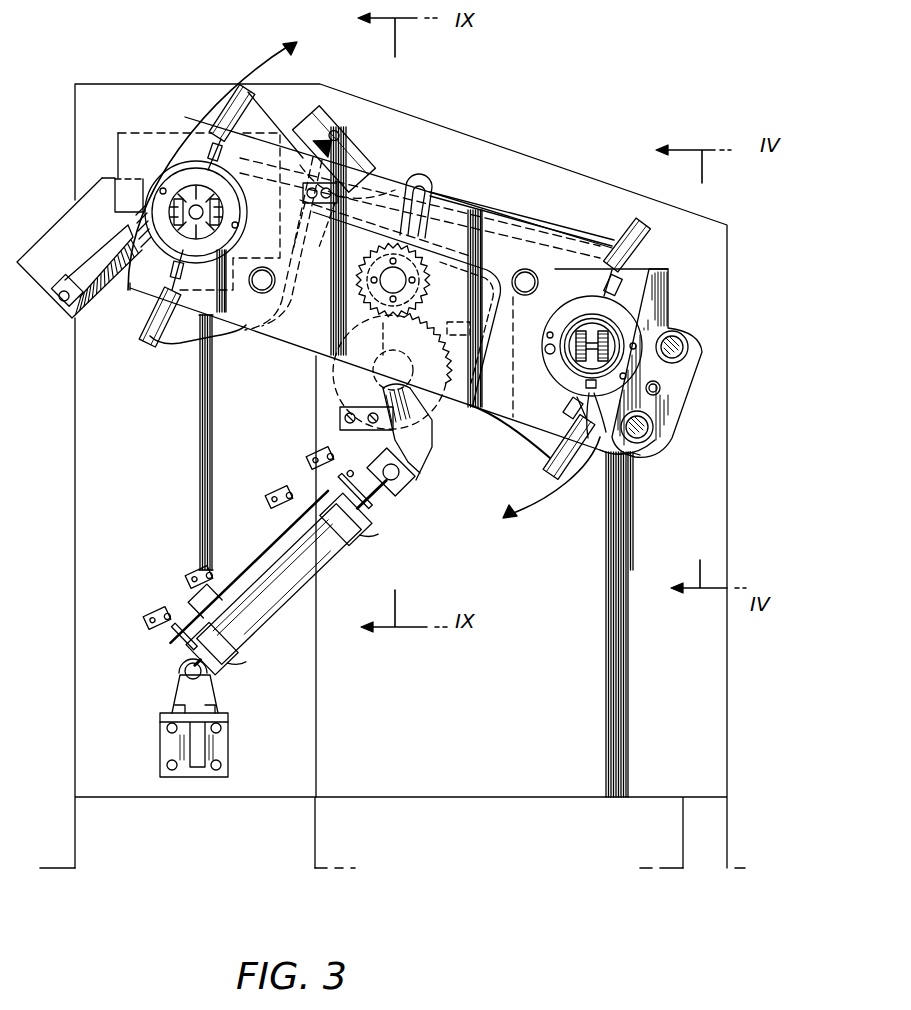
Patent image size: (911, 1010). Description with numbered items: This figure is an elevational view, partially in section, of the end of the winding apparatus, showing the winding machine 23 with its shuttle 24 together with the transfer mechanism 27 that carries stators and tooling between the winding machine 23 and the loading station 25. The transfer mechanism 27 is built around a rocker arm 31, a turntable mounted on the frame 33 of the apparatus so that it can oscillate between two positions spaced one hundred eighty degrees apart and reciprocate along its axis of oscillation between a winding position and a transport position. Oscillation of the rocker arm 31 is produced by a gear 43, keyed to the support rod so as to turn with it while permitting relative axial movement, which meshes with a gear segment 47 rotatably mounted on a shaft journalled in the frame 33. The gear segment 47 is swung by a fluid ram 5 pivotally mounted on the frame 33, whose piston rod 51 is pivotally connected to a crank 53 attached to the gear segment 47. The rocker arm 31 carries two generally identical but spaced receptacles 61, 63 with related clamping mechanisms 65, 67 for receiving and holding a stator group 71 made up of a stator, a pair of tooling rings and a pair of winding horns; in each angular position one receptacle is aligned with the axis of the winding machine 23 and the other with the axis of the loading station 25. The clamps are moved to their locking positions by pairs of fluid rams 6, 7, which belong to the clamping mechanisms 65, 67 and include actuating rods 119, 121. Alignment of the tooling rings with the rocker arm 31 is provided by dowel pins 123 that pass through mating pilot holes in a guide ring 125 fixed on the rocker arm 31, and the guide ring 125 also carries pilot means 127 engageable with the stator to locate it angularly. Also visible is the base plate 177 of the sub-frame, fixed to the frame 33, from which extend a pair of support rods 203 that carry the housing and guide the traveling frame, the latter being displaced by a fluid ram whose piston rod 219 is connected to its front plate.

The fluid ram 5 is at (318, 550).
The fluid ram 6 is at (632, 225).
The fluid ram 7 is at (233, 105).
The winding machine 23 is at (150, 500).
The shuttle 24 is at (190, 215).
The loading station 25 is at (640, 300).
The transfer mechanism 27 is at (505, 185).
The rocker arm 31 is at (298, 333).
The frame 33 is at (718, 480).
The gear 43 is at (352, 270).
The gear segment 47 is at (437, 328).
The piston rod 51 is at (398, 486).
The crank 53 is at (417, 428).
The receptacle 61 is at (178, 185).
The receptacle 63 is at (548, 363).
The clamping mechanism 65 is at (138, 292).
The clamping mechanism 67 is at (600, 249).
The stator group 71 is at (172, 192).
The actuating rod 119 is at (606, 284).
The actuating rod 121 is at (222, 152).
The dowel pin 123 is at (545, 351).
The guide ring 125 is at (566, 313).
The pilot means 127 is at (596, 440).
The base plate 177 is at (690, 368).
The support rod 203 is at (683, 346).
The piston rod 219 is at (662, 390).